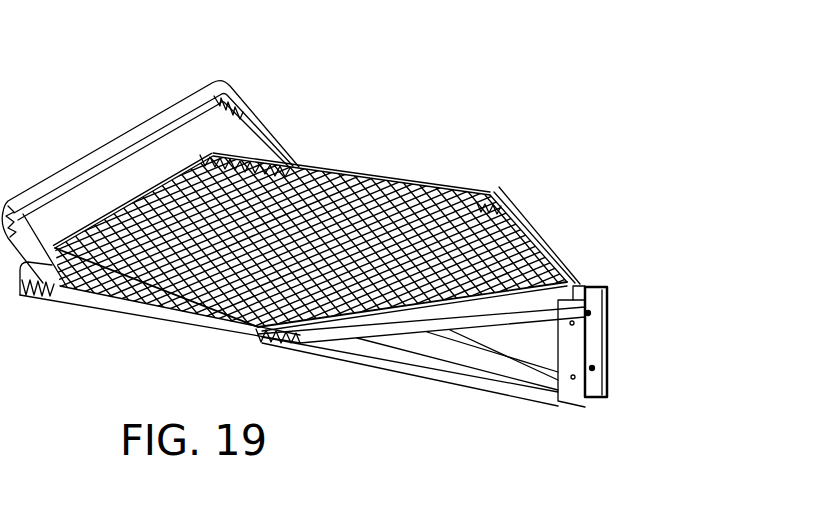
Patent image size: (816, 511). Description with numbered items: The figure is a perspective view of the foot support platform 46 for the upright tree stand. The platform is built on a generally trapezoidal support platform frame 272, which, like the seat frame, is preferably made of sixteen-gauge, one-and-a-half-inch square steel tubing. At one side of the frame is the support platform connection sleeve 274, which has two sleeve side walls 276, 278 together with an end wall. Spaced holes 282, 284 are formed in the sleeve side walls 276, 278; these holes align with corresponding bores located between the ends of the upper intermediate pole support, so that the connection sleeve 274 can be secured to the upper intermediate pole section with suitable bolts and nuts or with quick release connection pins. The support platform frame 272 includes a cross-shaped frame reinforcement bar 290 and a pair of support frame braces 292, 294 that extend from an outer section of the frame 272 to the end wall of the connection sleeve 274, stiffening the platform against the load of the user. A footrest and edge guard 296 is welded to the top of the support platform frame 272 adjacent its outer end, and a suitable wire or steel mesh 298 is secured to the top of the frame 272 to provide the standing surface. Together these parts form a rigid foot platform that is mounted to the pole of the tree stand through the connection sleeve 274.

The foot support platform 46 is at (440, 134).
The support platform frame 272 is at (126, 329).
The support platform connection sleeve 274 is at (638, 325).
The sleeve side wall 276 is at (575, 357).
The sleeve side wall 278 is at (605, 342).
The spaced holes 282 is at (575, 323).
The spaced holes 284 is at (573, 380).
The cross-shaped frame reinforcement bar 290 is at (368, 180).
The support frame brace 292 is at (397, 352).
The support frame brace 294 is at (517, 353).
The footrest and edge guard 296 is at (145, 110).
The wire or steel mesh 298 is at (463, 192).